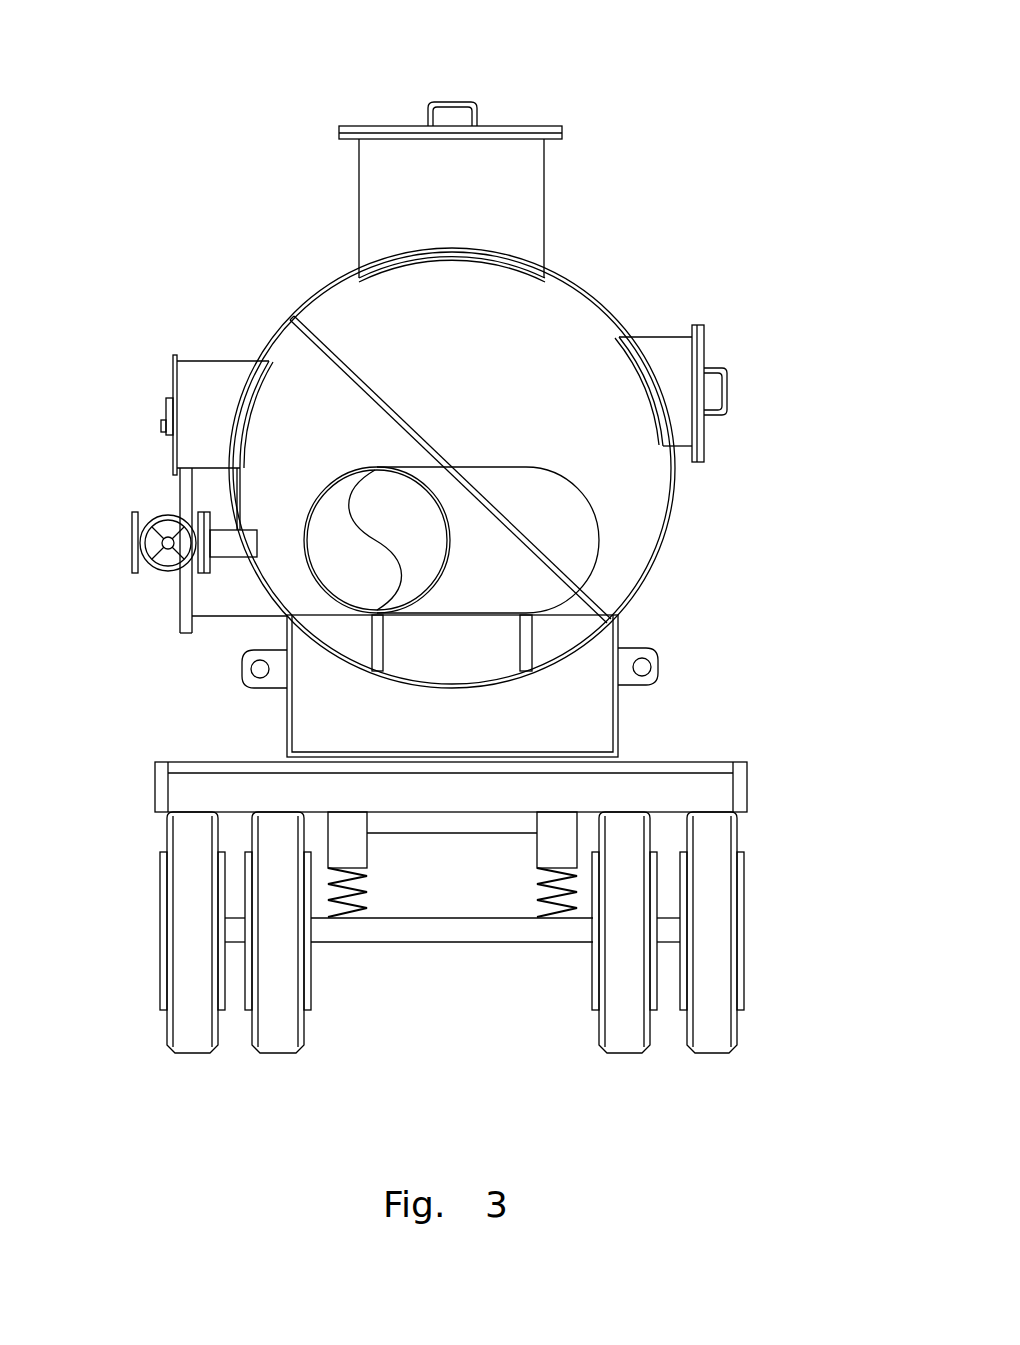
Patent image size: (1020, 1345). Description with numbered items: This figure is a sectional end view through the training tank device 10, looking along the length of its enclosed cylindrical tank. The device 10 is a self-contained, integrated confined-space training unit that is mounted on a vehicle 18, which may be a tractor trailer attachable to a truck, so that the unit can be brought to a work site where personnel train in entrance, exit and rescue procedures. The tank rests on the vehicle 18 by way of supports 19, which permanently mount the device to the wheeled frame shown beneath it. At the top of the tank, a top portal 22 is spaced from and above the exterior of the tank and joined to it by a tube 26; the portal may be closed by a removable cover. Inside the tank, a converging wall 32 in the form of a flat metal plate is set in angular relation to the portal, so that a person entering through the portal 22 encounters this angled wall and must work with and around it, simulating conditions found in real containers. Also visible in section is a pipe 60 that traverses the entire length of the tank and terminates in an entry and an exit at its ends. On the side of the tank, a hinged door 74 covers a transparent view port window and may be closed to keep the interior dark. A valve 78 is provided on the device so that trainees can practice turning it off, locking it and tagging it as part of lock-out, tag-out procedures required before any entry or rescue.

The training tank device 10 is at (830, 371).
The vehicle 18 is at (697, 757).
The supports 19 is at (577, 715).
The top portal 22 is at (522, 128).
The tube 26 is at (502, 191).
The converging wall 32 is at (328, 360).
The pipe 60 is at (558, 515).
The hinged door 74 is at (706, 338).
The valve 78 is at (145, 570).